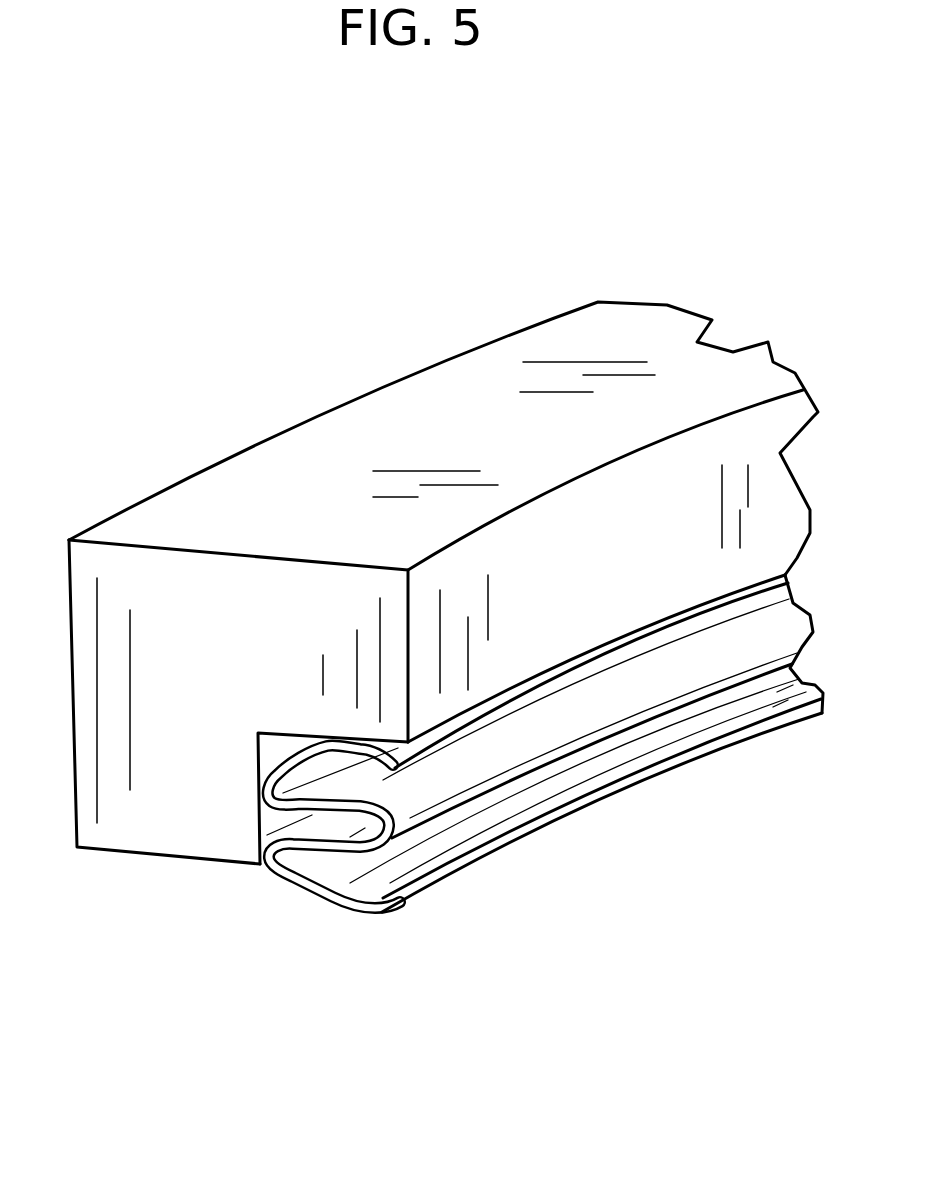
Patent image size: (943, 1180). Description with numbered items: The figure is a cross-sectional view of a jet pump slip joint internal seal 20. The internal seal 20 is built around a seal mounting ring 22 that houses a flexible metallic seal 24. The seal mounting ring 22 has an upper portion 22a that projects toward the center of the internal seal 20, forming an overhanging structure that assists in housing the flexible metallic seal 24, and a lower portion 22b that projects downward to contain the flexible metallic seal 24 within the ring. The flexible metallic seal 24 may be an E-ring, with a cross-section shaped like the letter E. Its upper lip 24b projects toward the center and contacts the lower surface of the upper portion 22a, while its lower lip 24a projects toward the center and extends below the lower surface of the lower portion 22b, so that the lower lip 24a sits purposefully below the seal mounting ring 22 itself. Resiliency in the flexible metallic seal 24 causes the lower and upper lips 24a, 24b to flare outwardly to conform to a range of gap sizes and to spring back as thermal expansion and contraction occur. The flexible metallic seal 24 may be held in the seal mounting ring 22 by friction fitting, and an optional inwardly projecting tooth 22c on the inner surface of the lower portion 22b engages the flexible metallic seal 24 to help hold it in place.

The jet pump slip joint internal seal 20 is at (528, 260).
The seal mounting ring 22 is at (117, 510).
The upper portion 22a is at (408, 535).
The lower portion 22b is at (172, 827).
The inwardly projecting tooth 22c is at (255, 827).
The flexible metallic seal 24 is at (517, 762).
The lower lip 24a is at (385, 910).
The upper lip 24b is at (393, 760).